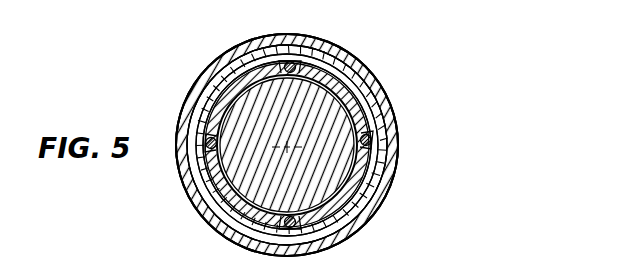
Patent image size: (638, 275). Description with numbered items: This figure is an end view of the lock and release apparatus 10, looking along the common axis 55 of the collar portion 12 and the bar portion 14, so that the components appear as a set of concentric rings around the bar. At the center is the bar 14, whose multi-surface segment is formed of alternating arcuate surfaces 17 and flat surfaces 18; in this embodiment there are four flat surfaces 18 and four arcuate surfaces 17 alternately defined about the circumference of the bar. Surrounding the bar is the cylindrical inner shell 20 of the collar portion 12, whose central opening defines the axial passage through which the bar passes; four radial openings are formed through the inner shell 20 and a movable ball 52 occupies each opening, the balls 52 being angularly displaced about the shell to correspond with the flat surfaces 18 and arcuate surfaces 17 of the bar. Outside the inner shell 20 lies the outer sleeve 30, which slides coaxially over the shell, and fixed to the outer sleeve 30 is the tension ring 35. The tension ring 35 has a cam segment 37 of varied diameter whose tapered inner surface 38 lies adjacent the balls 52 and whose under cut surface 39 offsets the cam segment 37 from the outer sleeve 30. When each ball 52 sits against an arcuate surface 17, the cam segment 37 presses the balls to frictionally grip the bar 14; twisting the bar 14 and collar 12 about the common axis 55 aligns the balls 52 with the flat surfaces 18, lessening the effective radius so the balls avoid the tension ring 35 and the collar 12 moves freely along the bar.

The lock and release apparatus 10 is at (466, 138).
The collar portion 12 is at (393, 95).
The bar portion 14 is at (363, 160).
The arcuate surfaces 17 is at (198, 169).
The flat surfaces 18 is at (227, 86).
The inner shell 20 is at (335, 155).
The outer sleeve 30 is at (397, 125).
The tension ring 35 is at (342, 70).
The cam segment 37 is at (342, 70).
The tapered inner surface 38 is at (353, 85).
The under cut surface 39 is at (367, 90).
The movable ball 52 is at (200, 135).
The common axis 55 is at (247, 90).